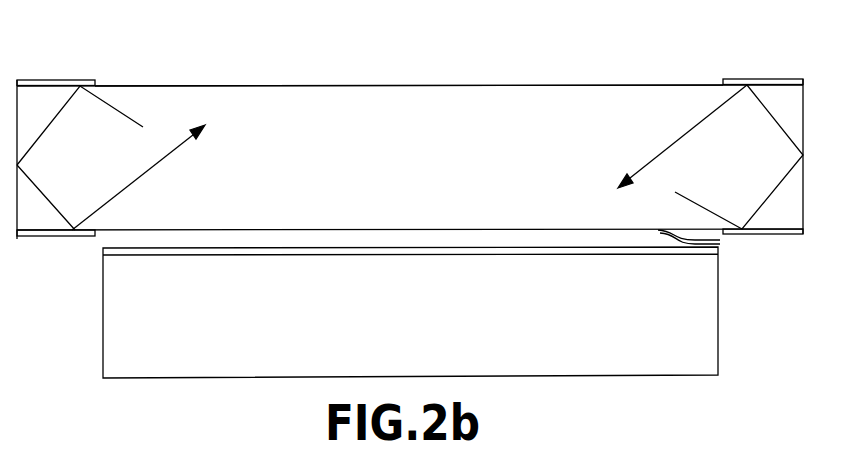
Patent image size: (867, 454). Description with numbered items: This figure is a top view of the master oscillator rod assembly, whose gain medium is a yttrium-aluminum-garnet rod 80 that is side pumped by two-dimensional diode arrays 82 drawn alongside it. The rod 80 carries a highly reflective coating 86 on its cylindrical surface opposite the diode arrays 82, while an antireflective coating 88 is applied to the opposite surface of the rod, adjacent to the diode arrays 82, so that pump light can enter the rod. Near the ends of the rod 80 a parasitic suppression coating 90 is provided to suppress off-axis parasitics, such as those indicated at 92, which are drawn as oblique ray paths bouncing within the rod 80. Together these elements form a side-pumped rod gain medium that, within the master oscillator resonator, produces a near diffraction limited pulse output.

The yttrium-aluminum-garnet rod 80 is at (637, 92).
The two-dimensional diode arrays 82 is at (103, 307).
The highly reflective coating 86 is at (430, 87).
The antireflective coating 88 is at (721, 245).
The parasitic suppression coating 90 is at (65, 80).
The off-axis parasitics 92 is at (160, 163).